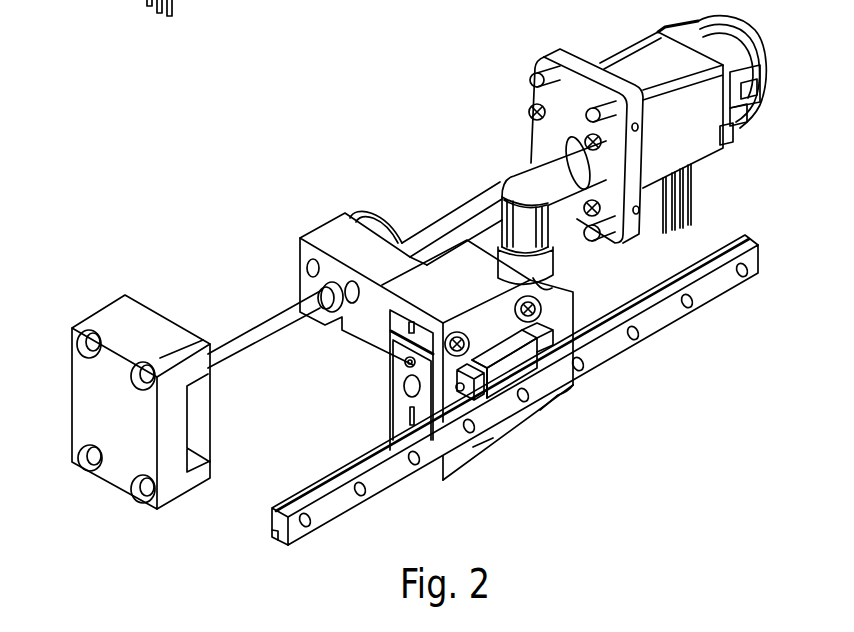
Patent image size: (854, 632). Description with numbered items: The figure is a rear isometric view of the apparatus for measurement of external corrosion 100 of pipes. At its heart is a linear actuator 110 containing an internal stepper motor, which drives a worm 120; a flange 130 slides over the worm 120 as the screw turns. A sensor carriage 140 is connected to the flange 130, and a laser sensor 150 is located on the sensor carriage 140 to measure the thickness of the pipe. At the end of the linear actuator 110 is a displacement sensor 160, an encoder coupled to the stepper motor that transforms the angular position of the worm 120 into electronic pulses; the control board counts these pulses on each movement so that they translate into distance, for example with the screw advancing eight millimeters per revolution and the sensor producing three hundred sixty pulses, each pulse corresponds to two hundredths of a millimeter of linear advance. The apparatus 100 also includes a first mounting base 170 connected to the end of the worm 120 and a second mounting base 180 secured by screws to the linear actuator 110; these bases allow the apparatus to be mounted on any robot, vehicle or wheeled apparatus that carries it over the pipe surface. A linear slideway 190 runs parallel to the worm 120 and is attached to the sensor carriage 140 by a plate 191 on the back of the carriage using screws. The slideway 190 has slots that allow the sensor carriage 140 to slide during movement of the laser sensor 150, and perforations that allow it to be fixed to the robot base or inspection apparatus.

The measuring apparatus for external corrosion of pipes 100 is at (409, 127).
The linear actuator 110 is at (645, 38).
The worm 120 is at (280, 315).
The flange 130 is at (352, 220).
The sensor carriage 140 is at (462, 462).
The laser sensor 150 is at (505, 182).
The displacement sensor 160 is at (700, 22).
The first mounting base 170 is at (82, 318).
The second mounting base 180 is at (548, 48).
The linear slideway 190 is at (658, 327).
The plate 191 is at (528, 415).